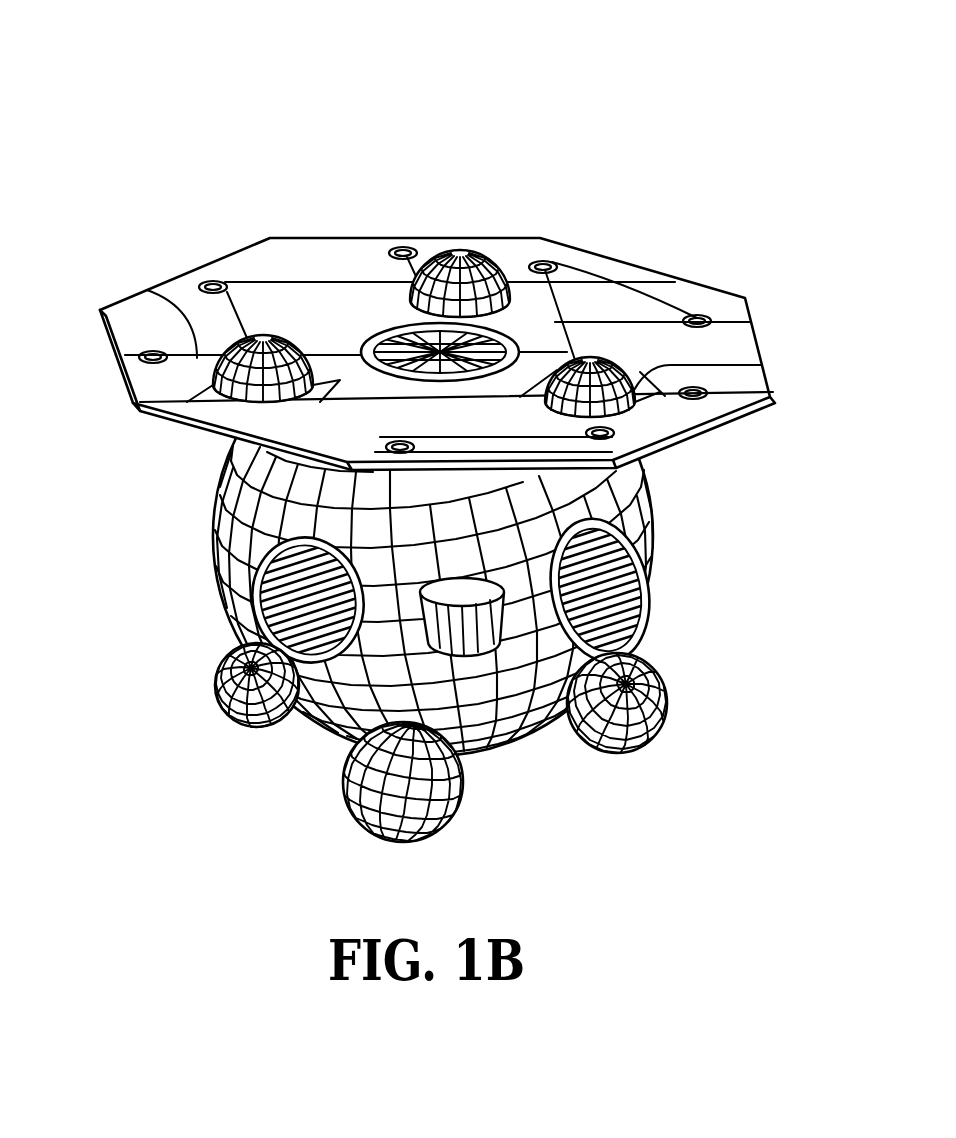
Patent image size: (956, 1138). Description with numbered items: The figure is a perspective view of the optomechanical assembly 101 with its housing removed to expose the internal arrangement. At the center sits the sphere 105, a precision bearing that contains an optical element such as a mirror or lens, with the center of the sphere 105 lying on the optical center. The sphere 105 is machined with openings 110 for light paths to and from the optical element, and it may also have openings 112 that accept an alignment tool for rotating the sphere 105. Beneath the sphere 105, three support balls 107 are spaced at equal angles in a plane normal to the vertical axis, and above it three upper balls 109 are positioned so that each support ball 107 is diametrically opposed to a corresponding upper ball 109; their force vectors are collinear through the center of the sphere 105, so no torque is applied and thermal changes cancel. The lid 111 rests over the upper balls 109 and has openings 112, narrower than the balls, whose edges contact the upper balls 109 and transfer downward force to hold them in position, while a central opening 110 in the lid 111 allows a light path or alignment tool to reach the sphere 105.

The optomechanical assembly 101 is at (733, 190).
The sphere 105 is at (650, 492).
The support balls 107 is at (222, 665).
The upper balls 109 is at (462, 253).
The openings 110 is at (372, 330).
The lid 111 is at (343, 253).
The openings 112 is at (183, 290).